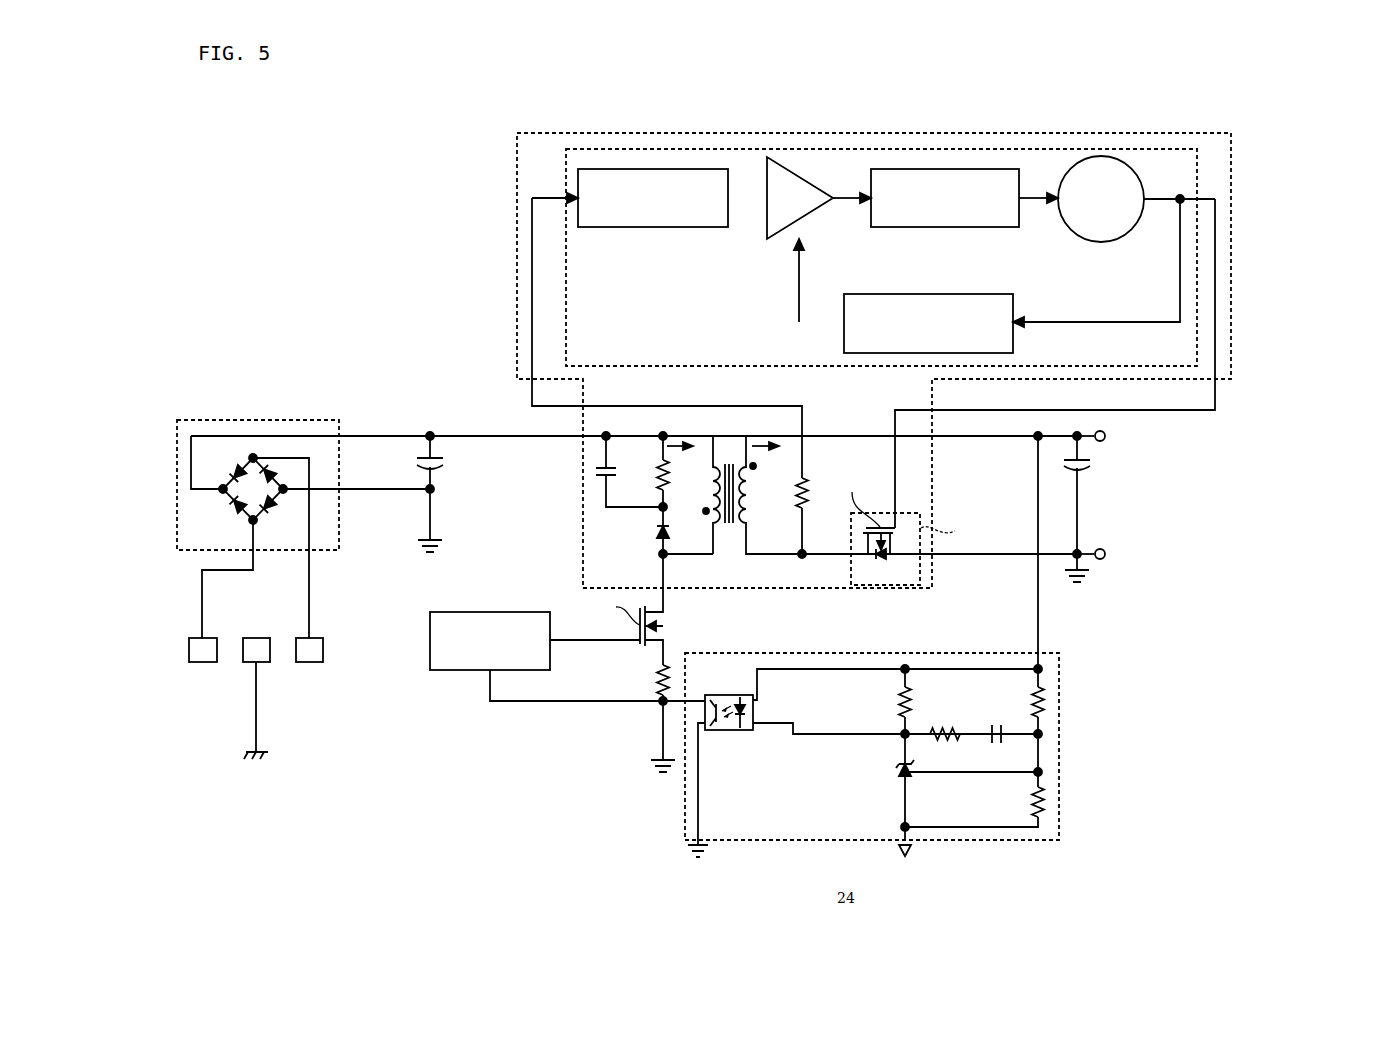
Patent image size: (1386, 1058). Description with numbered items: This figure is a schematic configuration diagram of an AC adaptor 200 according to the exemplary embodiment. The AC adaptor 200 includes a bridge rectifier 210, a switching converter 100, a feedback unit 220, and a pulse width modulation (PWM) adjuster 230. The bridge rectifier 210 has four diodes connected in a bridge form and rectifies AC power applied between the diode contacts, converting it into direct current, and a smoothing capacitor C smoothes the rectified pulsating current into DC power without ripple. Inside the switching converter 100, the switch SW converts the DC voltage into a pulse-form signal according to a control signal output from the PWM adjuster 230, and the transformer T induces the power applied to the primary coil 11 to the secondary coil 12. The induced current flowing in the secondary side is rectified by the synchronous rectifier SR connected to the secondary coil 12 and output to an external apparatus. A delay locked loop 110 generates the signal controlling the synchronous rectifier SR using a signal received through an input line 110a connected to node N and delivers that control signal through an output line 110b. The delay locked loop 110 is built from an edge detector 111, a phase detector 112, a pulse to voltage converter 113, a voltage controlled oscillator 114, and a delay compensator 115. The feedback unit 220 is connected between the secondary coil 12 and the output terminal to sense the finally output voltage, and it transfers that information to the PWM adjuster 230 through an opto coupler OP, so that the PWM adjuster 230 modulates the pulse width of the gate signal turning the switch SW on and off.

The AC adaptor 200 is at (220, 113).
The switching converter 100 is at (517, 183).
The delay locked loop 110 is at (843, 366).
The input line 110a is at (517, 308).
The output line 110b is at (1231, 308).
The edge detector 111 is at (652, 227).
The phase detector 112 is at (812, 220).
The pulse to voltage converter 113 is at (945, 227).
The voltage controlled oscillator 114 is at (1100, 242).
The delay compensator 115 is at (843, 338).
The bridge rectifier 210 is at (256, 420).
The feedback unit 220 is at (1059, 757).
The PWM adjuster 230 is at (430, 640).
The primary coil 11 is at (720, 527).
The secondary coil 12 is at (744, 527).